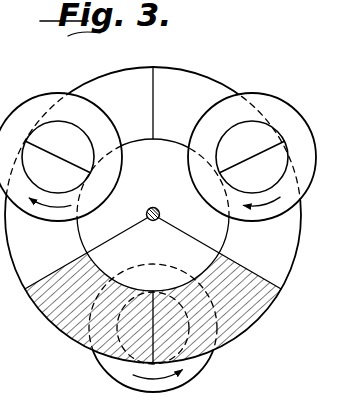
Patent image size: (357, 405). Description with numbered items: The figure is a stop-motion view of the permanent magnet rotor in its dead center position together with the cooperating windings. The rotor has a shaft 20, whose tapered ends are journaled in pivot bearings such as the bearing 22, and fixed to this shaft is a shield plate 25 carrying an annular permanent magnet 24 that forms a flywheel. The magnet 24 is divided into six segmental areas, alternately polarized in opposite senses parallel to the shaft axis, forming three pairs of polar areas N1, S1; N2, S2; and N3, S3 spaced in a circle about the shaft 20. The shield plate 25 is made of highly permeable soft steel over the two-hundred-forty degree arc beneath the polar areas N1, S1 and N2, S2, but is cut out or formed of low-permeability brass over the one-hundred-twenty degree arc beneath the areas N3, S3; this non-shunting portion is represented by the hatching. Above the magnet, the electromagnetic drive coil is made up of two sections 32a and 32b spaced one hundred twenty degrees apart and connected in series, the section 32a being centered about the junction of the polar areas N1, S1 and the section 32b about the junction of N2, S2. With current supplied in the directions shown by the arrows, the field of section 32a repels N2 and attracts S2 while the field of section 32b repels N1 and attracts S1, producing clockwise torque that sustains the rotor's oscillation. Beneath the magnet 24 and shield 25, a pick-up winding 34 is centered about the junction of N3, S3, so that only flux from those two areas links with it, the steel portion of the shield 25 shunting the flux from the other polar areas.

The shaft 20 is at (153, 222).
The pivot bearing 22 is at (289, 6).
The annular permanent magnet 24 is at (201, 72).
The shield plate 25 is at (165, 187).
The drive winding section 32a is at (290, 102).
The drive winding section 32b is at (40, 96).
The pick-up winding 34 is at (203, 368).
The polar area N1 is at (142, 112).
The polar area N2 is at (280, 249).
The polar area N3 is at (82, 295).
The polar area S1 is at (58, 257).
The polar area S2 is at (192, 112).
The polar area S3 is at (246, 306).